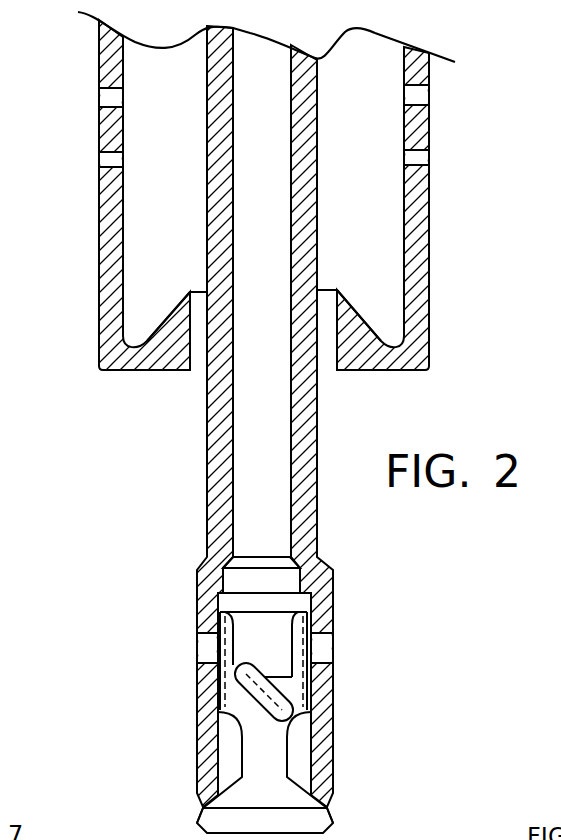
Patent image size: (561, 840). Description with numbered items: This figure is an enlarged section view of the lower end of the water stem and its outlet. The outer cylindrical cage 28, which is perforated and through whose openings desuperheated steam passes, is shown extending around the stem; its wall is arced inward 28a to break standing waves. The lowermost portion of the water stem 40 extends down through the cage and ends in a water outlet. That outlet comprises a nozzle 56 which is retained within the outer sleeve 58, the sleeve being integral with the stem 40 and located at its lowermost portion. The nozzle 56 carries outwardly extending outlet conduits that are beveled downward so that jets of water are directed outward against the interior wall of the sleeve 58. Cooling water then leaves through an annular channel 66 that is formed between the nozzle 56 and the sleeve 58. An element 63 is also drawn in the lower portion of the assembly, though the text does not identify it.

The outer cylindrical cage 28 is at (99, 318).
The inward arc of outer cylindrical cage 28a is at (173, 313).
The water stem 40 is at (208, 492).
The nozzle 56 is at (297, 636).
The outer sleeve 58 is at (334, 712).
The ball element 63 is at (272, 694).
The annular channel 66 is at (200, 812).